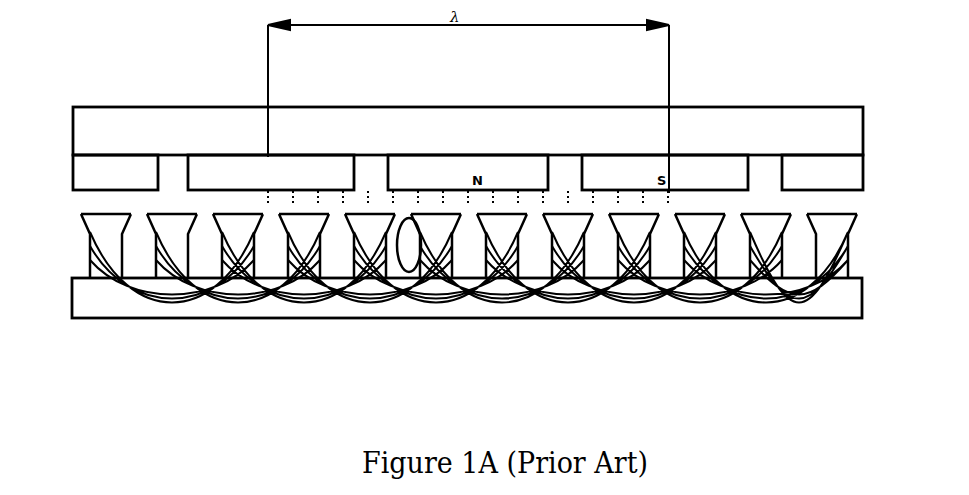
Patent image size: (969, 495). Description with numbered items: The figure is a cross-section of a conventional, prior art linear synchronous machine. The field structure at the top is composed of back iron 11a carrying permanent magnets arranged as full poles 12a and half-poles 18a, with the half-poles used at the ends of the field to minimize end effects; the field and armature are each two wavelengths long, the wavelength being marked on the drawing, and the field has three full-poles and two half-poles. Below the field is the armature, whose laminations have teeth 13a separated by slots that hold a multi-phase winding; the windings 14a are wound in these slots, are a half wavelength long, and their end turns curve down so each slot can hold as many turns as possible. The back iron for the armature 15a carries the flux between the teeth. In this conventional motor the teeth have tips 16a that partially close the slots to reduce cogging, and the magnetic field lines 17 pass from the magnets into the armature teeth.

The back iron 11a is at (131, 120).
The pole 12a is at (243, 165).
The teeth 13a is at (307, 228).
The windings 14a is at (403, 218).
The back iron for the armature 15a is at (472, 310).
The tips 16a is at (563, 222).
The magnetic field lines 17 is at (622, 203).
The half-pole 18a is at (808, 163).